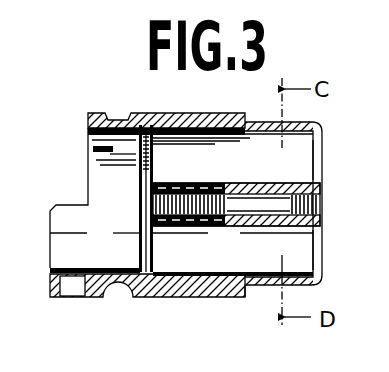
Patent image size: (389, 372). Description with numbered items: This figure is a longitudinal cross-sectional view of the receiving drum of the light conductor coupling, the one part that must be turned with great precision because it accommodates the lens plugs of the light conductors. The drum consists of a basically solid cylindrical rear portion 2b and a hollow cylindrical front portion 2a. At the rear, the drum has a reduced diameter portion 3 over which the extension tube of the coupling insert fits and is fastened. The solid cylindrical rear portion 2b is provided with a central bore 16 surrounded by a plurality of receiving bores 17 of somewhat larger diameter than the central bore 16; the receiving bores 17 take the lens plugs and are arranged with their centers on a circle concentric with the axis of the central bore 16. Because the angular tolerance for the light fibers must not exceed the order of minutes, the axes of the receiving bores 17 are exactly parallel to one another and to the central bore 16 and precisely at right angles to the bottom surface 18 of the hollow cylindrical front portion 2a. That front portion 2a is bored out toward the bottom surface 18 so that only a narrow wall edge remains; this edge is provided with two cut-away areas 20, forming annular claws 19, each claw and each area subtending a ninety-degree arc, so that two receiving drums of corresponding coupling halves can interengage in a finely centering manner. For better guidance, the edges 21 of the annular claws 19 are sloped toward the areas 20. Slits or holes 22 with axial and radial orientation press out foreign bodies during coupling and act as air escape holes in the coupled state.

The hollow cylindrical front portion 2a is at (95, 234).
The solid cylindrical rear portion 2b is at (233, 234).
The reduced diameter portion 3 is at (276, 282).
The central bore 16 is at (276, 192).
The receiving bores 17 is at (310, 154).
The bottom surface 18 is at (153, 252).
The annular claws 19 is at (67, 249).
The cut-away areas 20 is at (83, 189).
The edges 21 is at (57, 207).
The slits or holes 22 is at (94, 150).